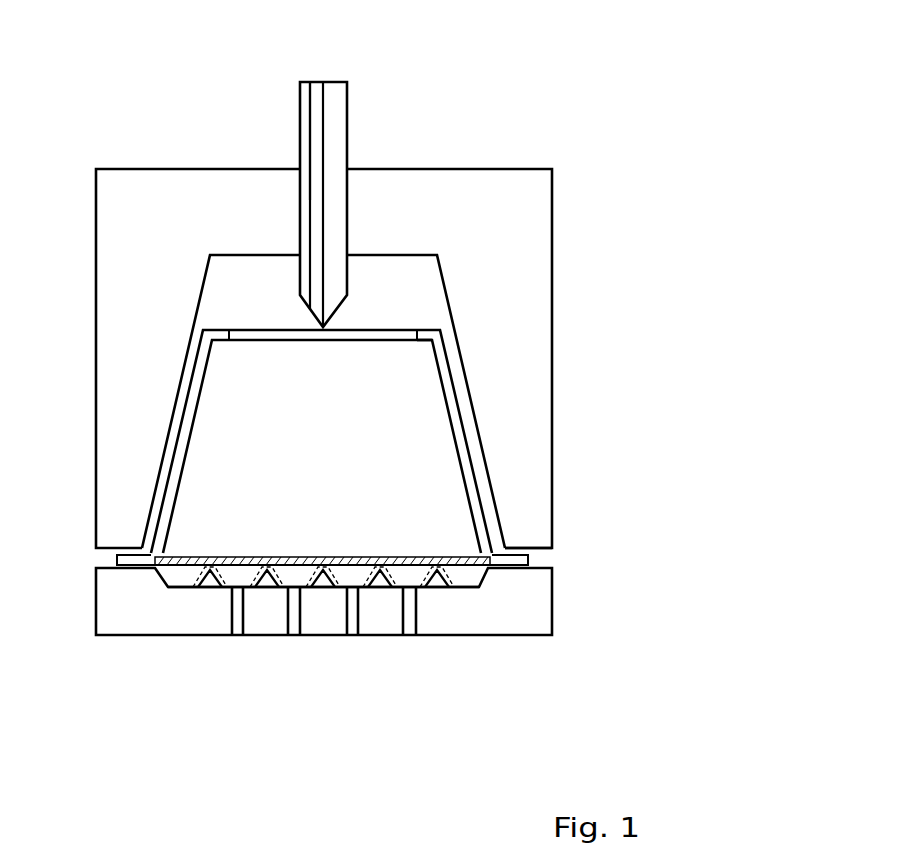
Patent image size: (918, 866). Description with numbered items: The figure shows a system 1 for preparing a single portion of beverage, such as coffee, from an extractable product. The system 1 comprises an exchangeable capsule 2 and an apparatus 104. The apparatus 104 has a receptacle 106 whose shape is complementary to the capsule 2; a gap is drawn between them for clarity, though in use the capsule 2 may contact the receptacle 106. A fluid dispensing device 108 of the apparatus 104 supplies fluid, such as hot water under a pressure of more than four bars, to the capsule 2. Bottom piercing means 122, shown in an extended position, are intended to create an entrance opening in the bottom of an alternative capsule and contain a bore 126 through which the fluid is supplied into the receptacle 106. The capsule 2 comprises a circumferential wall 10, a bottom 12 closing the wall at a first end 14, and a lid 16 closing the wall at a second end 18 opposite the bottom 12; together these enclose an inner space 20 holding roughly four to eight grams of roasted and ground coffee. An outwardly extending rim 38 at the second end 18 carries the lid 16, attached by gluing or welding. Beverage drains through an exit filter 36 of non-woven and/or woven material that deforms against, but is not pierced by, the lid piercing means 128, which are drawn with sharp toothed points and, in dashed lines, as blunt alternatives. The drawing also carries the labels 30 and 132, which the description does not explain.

The system 1 is at (396, 403).
The exchangeable capsule 2 is at (475, 447).
The circumferential wall 10 is at (407, 322).
The bottom 12 is at (407, 337).
The first end 14 is at (440, 342).
The lid 16 is at (324, 640).
The second end 18 is at (517, 548).
The inner space 20 is at (252, 446).
The heating layer 30 is at (381, 553).
The exit filter 36 is at (415, 565).
The outwardly extending rim 38 is at (528, 559).
The apparatus 104 is at (411, 277).
The receptacle 106 is at (552, 280).
The fluid dispensing device 108 is at (373, 167).
The bottom piercing means 122 is at (347, 135).
The bore 126 is at (317, 82).
The lid piercing means 128 is at (210, 585).
The channel 132 is at (237, 630).